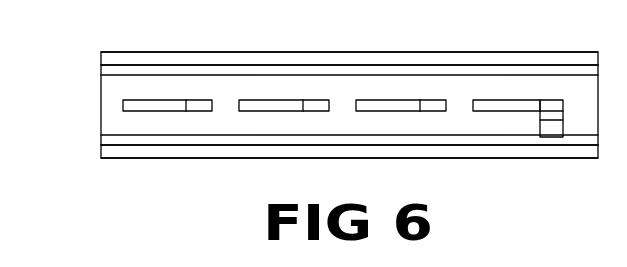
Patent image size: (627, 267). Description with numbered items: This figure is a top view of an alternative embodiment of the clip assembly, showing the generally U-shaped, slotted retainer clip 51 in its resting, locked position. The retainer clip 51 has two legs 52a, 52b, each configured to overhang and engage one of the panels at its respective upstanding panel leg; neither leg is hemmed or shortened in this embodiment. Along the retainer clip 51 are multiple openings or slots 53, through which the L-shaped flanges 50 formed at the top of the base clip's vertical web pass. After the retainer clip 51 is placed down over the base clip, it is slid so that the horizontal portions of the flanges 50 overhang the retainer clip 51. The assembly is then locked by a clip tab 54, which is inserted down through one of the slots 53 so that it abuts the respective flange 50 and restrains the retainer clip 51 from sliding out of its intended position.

The L-shaped flange 50 is at (262, 104).
The slotted retainer clip 51 is at (102, 94).
The leg 52a is at (100, 51).
The leg 52b is at (102, 151).
The slot 53 is at (437, 105).
The clip tab 54 is at (553, 128).